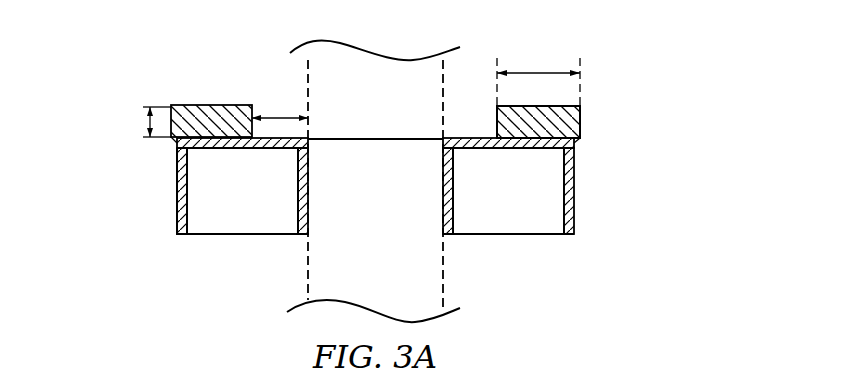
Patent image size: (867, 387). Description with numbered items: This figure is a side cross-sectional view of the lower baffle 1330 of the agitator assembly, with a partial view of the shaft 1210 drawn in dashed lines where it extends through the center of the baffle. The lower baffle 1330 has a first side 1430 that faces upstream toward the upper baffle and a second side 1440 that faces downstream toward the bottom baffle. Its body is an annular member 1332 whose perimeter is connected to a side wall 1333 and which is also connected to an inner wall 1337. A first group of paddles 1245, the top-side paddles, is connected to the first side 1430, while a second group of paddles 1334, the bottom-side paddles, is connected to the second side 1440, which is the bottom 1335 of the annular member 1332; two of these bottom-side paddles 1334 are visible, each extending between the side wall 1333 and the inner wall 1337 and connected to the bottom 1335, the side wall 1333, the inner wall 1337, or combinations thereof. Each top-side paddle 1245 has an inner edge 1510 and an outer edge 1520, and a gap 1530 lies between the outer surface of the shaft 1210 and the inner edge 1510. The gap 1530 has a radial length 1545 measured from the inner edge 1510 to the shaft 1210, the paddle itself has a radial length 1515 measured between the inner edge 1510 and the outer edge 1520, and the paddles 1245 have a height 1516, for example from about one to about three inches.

The lower baffle 1330 is at (190, 44).
The first group of paddles 1245 is at (183, 105).
The outer edge 1520 is at (580, 118).
The inner edge 1510 is at (497, 107).
The shaft 1210 is at (358, 62).
The gap 1530 is at (296, 96).
The radial length 1545 is at (280, 117).
The height 1516 is at (145, 120).
The radial length 1515 is at (538, 72).
The bottom 1335 is at (257, 150).
The second side 1440 is at (523, 150).
The first side 1430 is at (177, 150).
The annular member 1332 is at (224, 152).
The inner wall 1337 is at (293, 207).
The second group of paddles 1334 is at (273, 210).
The side wall 1333 is at (575, 192).